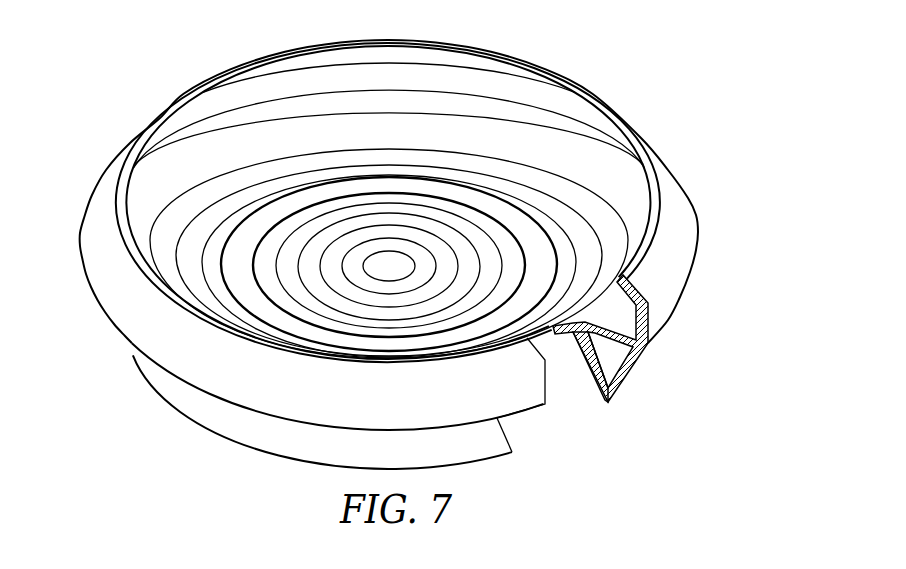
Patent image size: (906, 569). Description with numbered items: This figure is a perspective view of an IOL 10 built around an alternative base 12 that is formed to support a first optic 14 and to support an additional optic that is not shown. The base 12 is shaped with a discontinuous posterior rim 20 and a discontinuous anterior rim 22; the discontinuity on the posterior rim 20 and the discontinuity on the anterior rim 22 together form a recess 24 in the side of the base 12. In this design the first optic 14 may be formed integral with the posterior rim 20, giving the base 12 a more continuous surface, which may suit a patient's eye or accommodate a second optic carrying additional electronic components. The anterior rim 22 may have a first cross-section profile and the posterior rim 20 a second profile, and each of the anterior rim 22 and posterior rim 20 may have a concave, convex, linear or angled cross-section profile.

The IOL 10 is at (153, 43).
The base 12 is at (692, 214).
The first optic 14 is at (273, 246).
The posterior rim 20 is at (656, 386).
The anterior rim 22 is at (706, 318).
The recess 24 is at (591, 412).